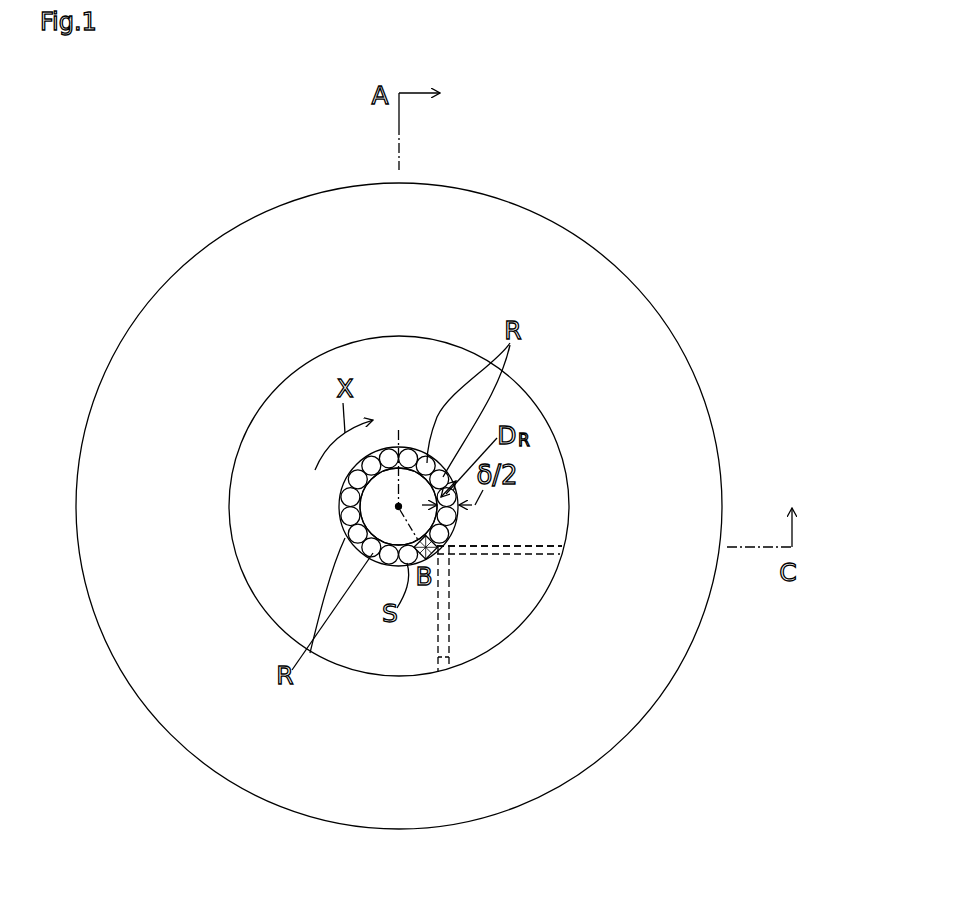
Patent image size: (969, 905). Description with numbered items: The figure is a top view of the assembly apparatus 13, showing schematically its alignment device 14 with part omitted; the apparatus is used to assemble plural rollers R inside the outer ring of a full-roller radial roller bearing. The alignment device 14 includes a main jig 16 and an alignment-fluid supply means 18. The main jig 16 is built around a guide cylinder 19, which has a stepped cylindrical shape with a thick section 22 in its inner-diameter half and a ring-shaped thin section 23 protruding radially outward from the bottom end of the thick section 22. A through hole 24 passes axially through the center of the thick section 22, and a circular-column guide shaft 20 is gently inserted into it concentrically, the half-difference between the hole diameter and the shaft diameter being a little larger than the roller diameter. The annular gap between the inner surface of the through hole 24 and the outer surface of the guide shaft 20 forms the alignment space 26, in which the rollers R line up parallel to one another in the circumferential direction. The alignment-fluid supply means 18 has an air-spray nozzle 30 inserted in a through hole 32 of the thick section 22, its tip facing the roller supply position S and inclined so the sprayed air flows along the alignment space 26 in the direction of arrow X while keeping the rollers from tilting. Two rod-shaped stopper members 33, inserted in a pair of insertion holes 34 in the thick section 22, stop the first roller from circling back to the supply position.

The assembly apparatus 13 is at (522, 183).
The alignment device 14 is at (560, 208).
The main jig 16 is at (573, 290).
The alignment-fluid supply means 18 is at (522, 557).
The guide cylinder 19 is at (263, 253).
The guide shaft 20 is at (337, 520).
The thick section 22 is at (297, 410).
The thin section 23 is at (120, 393).
The through hole 24 is at (340, 508).
The alignment space 26 is at (423, 460).
The air-spray nozzle 30 is at (515, 545).
The through hole 32 is at (543, 553).
The stopper member 33 is at (450, 617).
The insertion hole 34 is at (440, 663).